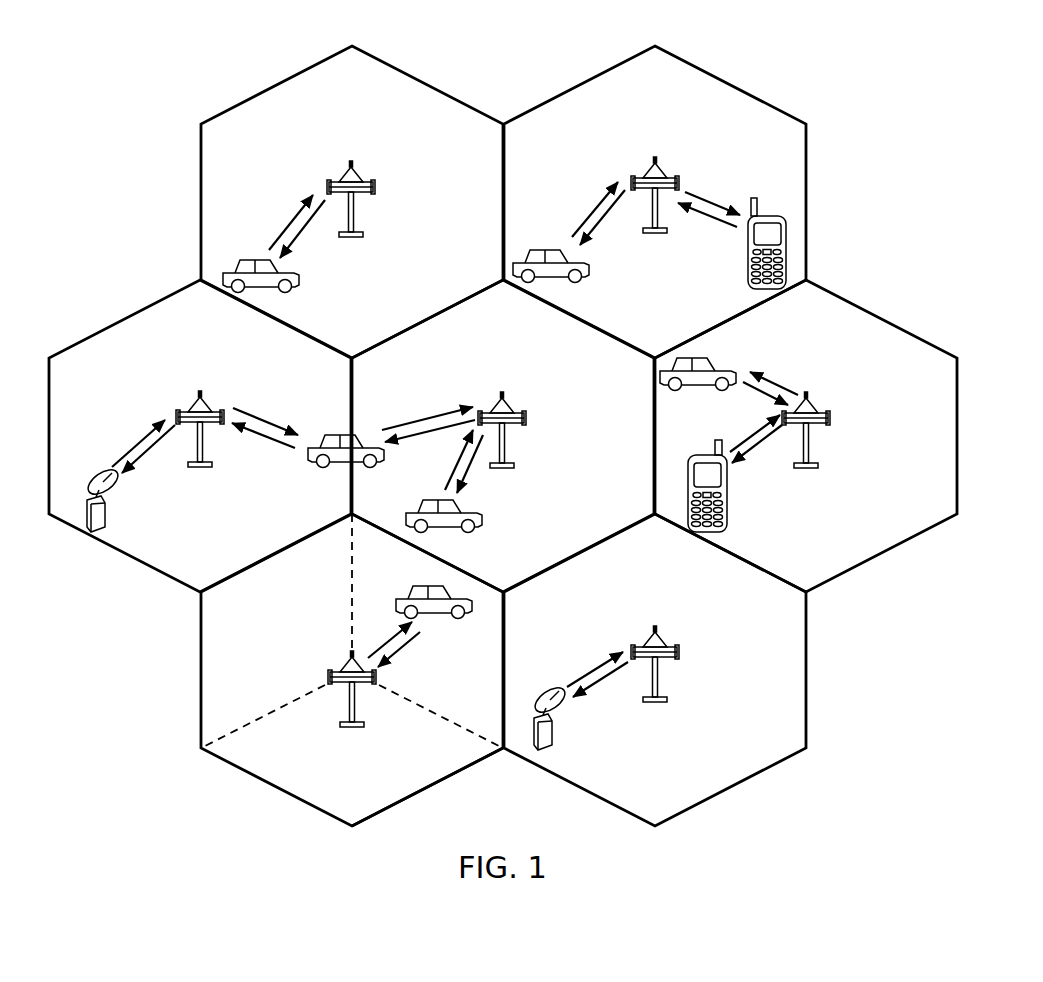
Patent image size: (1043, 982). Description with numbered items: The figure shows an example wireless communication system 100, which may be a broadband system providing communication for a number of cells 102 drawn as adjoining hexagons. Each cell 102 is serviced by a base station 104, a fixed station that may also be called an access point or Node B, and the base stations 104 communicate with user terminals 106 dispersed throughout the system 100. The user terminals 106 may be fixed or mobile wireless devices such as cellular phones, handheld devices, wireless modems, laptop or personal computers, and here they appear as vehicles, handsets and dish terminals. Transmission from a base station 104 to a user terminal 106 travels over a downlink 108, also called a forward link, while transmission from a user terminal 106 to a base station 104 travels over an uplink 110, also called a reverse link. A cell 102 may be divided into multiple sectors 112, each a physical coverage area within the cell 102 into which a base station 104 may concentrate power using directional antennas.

The wireless communication system 100 is at (942, 129).
The cell 102 is at (281, 80).
The base station 104 is at (351, 162).
The user terminal 106 is at (300, 284).
The downlink 108 is at (295, 240).
The uplink 110 is at (292, 223).
The sector 112 is at (405, 786).